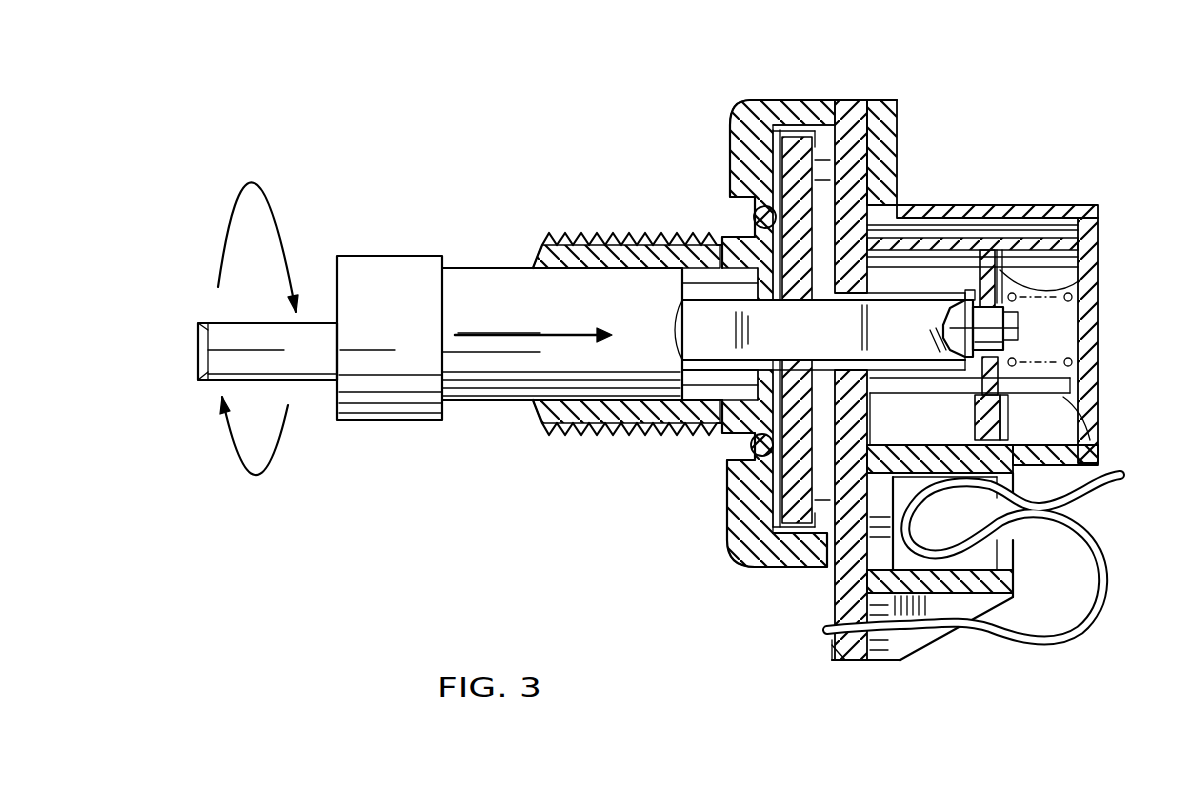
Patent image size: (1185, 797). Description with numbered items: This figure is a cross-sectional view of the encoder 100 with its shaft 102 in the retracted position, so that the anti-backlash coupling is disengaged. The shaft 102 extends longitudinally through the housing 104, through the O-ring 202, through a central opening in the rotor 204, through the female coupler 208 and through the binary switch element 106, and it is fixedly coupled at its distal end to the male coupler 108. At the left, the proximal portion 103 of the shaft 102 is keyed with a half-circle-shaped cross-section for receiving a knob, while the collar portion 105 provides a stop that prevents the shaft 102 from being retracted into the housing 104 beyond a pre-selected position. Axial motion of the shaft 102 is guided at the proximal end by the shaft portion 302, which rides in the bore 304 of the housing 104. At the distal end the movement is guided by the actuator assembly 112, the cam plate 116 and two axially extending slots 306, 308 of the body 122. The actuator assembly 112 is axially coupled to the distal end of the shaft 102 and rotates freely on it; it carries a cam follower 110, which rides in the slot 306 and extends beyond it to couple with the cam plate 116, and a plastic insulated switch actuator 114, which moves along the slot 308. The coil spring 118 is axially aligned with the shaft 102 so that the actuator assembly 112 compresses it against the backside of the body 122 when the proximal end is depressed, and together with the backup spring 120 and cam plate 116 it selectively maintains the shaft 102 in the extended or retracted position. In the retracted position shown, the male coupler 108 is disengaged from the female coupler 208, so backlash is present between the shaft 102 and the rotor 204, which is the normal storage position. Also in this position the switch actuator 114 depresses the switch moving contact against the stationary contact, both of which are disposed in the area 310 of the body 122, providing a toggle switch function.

The encoder 100 is at (553, 108).
The shaft 102 is at (198, 342).
The proximal portion 103 is at (318, 397).
The housing 104 is at (757, 110).
The collar portion 105 is at (364, 243).
The binary switch element 106 is at (891, 70).
The male coupler 108 is at (943, 335).
The cam follower 110 is at (1098, 258).
The actuator assembly 112 is at (1020, 340).
The switch actuator 114 is at (977, 438).
The cam plate 116 is at (1098, 205).
The coil spring 118 is at (1098, 303).
The backup spring 120 is at (970, 205).
The body 122 is at (897, 128).
The O-ring 202 is at (738, 204).
The rotor 204 is at (812, 103).
The female coupler 208 is at (860, 293).
The shaft portion 302 is at (508, 417).
The bore 304 is at (711, 401).
The slot 306 is at (1052, 257).
The slot 308 is at (1090, 440).
The area 310 is at (1100, 472).